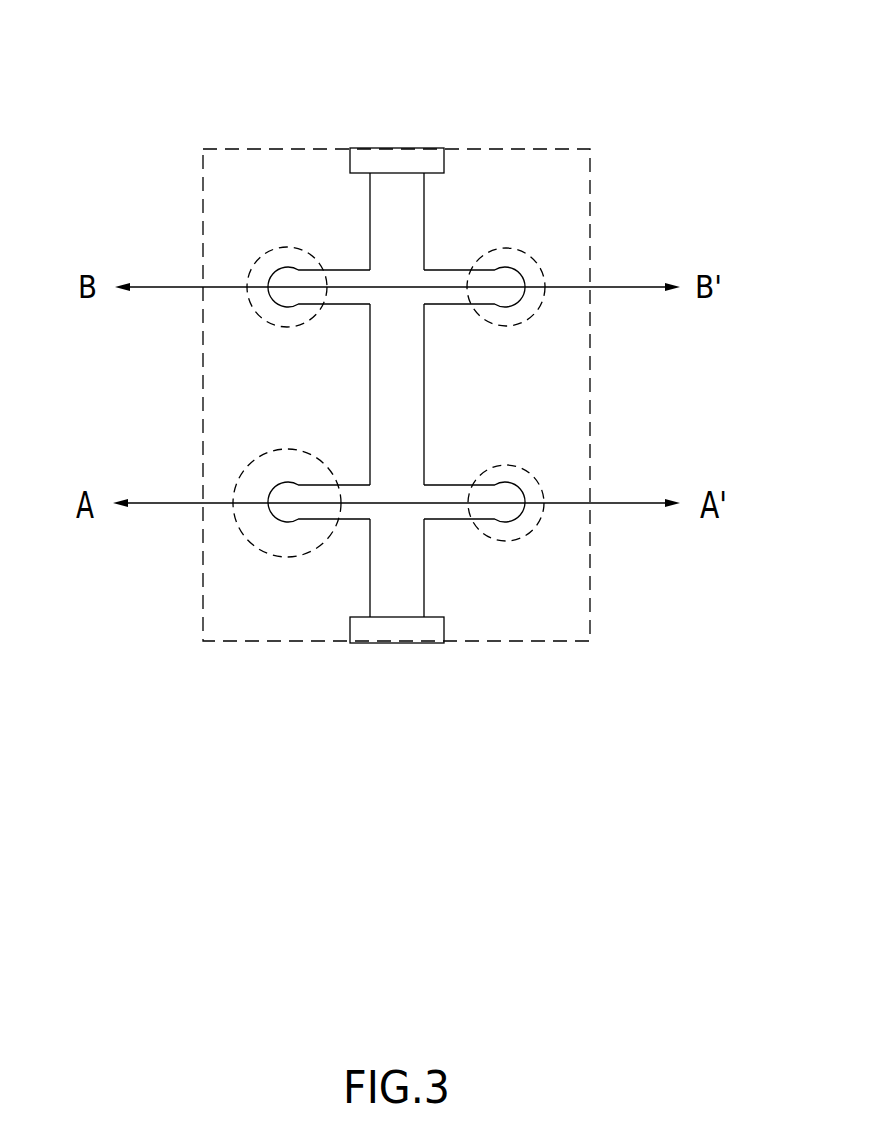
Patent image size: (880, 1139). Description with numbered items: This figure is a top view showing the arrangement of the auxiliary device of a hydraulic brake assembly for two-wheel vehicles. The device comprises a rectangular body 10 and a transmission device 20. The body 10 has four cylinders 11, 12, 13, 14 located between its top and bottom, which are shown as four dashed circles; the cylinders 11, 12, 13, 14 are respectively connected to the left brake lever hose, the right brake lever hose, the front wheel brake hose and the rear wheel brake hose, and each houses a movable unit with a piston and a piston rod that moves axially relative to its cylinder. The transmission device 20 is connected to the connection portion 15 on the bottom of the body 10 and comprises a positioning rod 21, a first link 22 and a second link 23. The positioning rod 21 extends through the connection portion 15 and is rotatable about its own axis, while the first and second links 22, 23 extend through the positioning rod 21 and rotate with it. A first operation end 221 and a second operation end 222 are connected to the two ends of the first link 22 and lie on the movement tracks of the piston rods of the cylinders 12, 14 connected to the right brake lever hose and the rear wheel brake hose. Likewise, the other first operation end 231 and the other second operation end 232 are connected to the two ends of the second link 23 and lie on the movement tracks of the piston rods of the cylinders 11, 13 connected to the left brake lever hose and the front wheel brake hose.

The body 10 is at (562, 155).
The cylinder 11 is at (527, 262).
The cylinder 12 is at (525, 527).
The cylinder 13 is at (268, 262).
The cylinder 14 is at (255, 535).
The connection portion 15 is at (380, 153).
The transmission device 20 is at (397, 415).
The positioning rod 21 is at (415, 210).
The first link 22 is at (397, 515).
The first operation end 221 is at (508, 497).
The second operation end 222 is at (287, 497).
The second link 23 is at (397, 277).
The first operation end 231 is at (508, 295).
The second operation end 232 is at (283, 295).